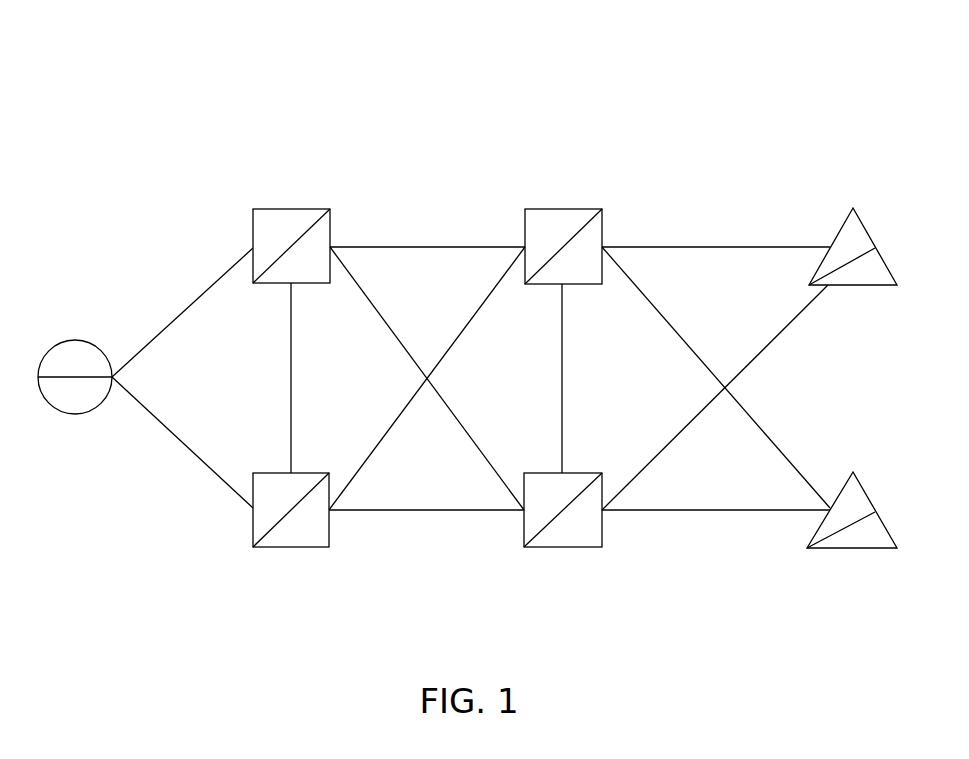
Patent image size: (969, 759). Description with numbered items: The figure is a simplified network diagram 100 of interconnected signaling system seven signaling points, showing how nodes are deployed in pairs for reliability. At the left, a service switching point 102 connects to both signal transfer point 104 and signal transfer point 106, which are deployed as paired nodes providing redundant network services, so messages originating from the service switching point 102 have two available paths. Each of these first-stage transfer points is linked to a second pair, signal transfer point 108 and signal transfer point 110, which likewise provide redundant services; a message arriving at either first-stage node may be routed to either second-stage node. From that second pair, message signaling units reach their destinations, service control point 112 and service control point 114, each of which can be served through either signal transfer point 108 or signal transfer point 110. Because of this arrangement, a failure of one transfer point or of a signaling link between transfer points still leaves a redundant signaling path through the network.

The optical interconnect system 100 is at (181, 85).
The service switching point 102 is at (87, 340).
The signal transfer point 104 is at (308, 208).
The signal transfer point 106 is at (308, 548).
The signal transfer point 108 is at (580, 208).
The signal transfer point 110 is at (578, 548).
The service control point 112 is at (863, 287).
The service control point 114 is at (863, 550).